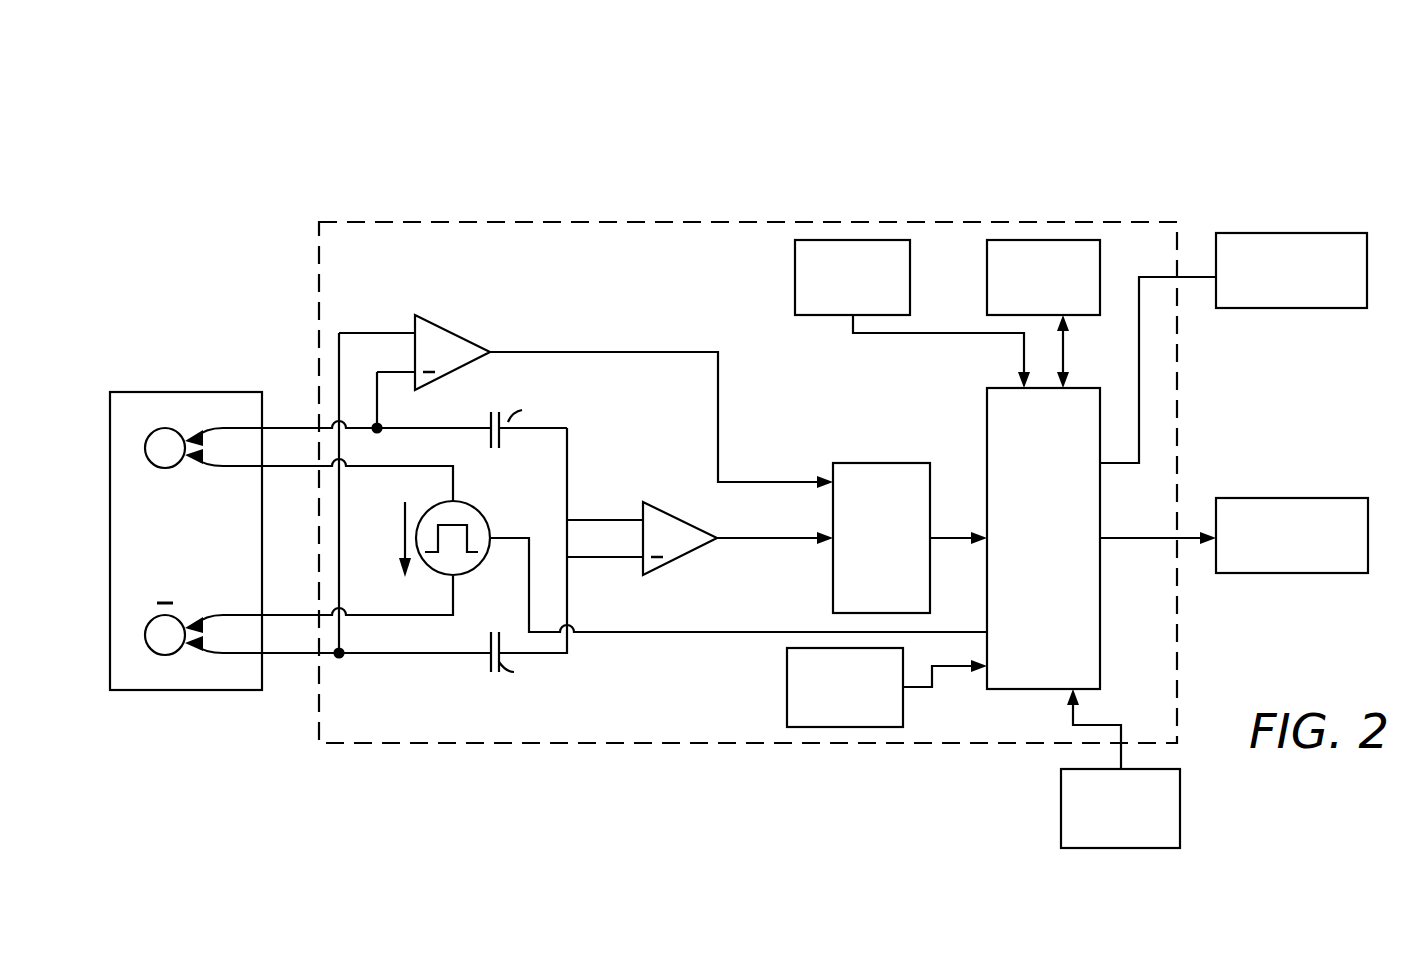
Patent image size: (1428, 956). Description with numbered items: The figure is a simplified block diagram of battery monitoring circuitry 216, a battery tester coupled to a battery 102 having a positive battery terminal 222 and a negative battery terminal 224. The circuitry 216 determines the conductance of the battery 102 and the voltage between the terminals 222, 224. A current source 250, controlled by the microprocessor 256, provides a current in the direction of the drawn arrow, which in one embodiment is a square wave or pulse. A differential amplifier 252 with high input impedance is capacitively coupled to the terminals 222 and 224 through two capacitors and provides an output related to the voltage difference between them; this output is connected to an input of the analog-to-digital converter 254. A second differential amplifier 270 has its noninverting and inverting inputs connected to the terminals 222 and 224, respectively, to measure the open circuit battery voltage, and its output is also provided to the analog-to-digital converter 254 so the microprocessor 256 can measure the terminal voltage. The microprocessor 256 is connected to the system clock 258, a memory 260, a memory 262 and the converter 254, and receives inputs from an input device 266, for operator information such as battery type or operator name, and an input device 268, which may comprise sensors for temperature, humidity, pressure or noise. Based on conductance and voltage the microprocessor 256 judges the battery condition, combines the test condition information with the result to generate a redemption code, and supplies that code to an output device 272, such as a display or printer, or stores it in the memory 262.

The battery 102 is at (109, 372).
The positive battery terminal 222 is at (145, 448).
The negative battery terminal 224 is at (145, 635).
The battery monitoring circuitry 216 is at (475, 222).
The differential amplifier 270 is at (462, 335).
The current source 250 is at (488, 515).
The differential amplifier 252 is at (697, 551).
The analog-to-digital converter 254 is at (870, 463).
The microprocessor 256 is at (1043, 538).
The system clock 258 is at (795, 287).
The memory 260 is at (987, 290).
The memory 262 is at (1245, 233).
The input device 266 is at (1061, 800).
The input device 268 is at (787, 703).
The output device 272 is at (1302, 498).